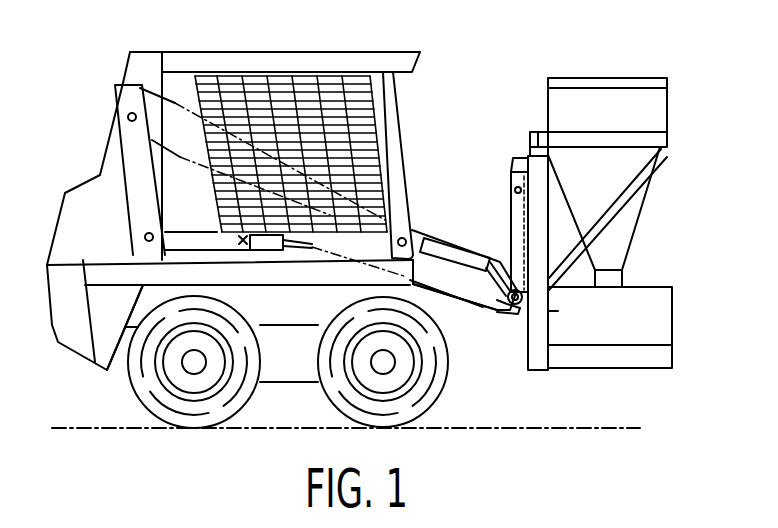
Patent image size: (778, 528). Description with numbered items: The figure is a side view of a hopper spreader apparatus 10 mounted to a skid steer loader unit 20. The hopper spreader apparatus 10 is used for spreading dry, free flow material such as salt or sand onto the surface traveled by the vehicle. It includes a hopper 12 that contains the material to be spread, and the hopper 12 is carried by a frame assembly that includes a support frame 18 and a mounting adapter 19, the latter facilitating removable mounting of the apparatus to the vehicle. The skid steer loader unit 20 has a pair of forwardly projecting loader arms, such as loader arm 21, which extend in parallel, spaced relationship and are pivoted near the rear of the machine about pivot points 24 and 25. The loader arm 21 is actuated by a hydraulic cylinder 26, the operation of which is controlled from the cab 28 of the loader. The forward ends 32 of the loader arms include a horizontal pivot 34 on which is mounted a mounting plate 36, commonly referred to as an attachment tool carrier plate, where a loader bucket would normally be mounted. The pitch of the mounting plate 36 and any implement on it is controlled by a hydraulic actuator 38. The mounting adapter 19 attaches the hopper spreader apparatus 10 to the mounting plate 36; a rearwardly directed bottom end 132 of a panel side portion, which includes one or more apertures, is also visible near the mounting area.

The hopper spreader apparatus 10 is at (538, 80).
The hopper 12 is at (662, 115).
The support frame 18 is at (565, 279).
The mounting adapter 19 is at (528, 344).
The skid steer loader unit 20 is at (211, 36).
The loader arm 21 is at (432, 256).
The pivot point 24 is at (147, 235).
The pivot point 25 is at (130, 117).
The hydraulic cylinder 26 is at (222, 233).
The cab 28 is at (338, 62).
The forward ends of the loader arms 32 is at (458, 292).
The horizontal pivot 34 is at (496, 308).
The mounting plate 36 is at (508, 190).
The hydraulic actuator 38 is at (478, 252).
The bottom end 132 is at (552, 313).